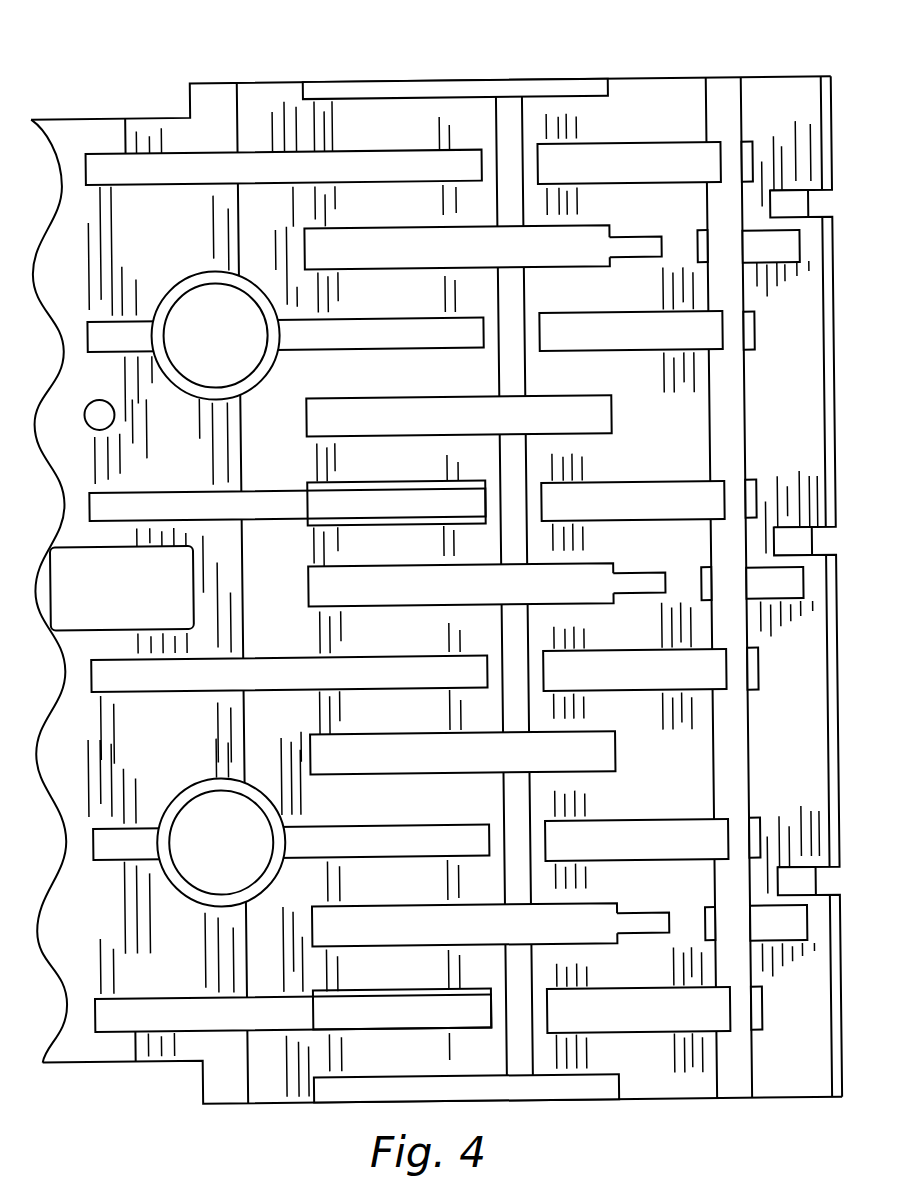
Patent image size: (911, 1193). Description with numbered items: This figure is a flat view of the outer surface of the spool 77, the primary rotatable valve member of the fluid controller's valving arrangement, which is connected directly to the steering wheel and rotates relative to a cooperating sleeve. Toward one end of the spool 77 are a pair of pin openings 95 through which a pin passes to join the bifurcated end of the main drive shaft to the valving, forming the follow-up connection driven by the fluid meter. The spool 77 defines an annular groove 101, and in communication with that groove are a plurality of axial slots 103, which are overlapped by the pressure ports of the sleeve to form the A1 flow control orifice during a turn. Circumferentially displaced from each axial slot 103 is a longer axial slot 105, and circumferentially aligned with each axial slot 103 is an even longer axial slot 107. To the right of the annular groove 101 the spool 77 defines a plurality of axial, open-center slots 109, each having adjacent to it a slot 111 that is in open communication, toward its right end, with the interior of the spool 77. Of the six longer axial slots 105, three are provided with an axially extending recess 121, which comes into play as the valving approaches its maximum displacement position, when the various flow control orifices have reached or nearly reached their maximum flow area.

The primary rotatable valve member (spool) 77 is at (628, 57).
The pin openings 95 is at (204, 292).
The annular groove 101 is at (736, 426).
The axial slots 103 is at (626, 146).
The longer axial slot 105 is at (421, 240).
The even longer axial slot 107 is at (261, 496).
The axial open-center slots 109 is at (774, 253).
The slot 111 is at (793, 200).
The axially extending recess 121 is at (642, 243).